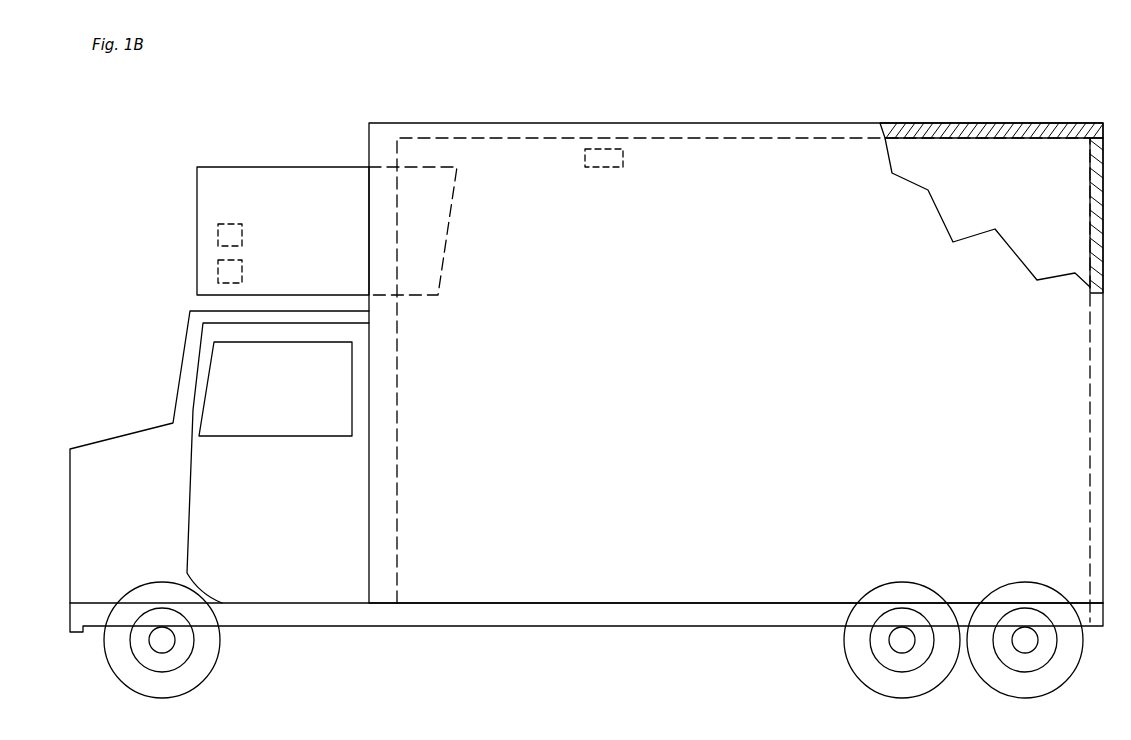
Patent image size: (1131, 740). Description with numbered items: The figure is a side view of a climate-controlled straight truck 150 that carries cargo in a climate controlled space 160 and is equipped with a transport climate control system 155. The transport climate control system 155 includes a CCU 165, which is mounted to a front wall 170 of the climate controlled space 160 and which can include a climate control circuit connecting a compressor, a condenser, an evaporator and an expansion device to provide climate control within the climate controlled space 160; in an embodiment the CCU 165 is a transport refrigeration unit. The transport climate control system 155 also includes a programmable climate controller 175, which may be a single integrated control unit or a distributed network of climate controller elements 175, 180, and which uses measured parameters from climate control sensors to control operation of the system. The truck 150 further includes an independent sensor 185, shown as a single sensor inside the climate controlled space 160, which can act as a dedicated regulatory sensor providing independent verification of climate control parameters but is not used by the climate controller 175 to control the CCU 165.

The truck 150 is at (786, 86).
The transport climate control system 155 is at (320, 124).
The climate controlled space 160 is at (950, 165).
The CCU 165 is at (261, 167).
The front wall 170 is at (397, 185).
The climate controller 175 is at (218, 265).
The climate controller element 180 is at (218, 228).
The independent sensor 185 is at (597, 148).